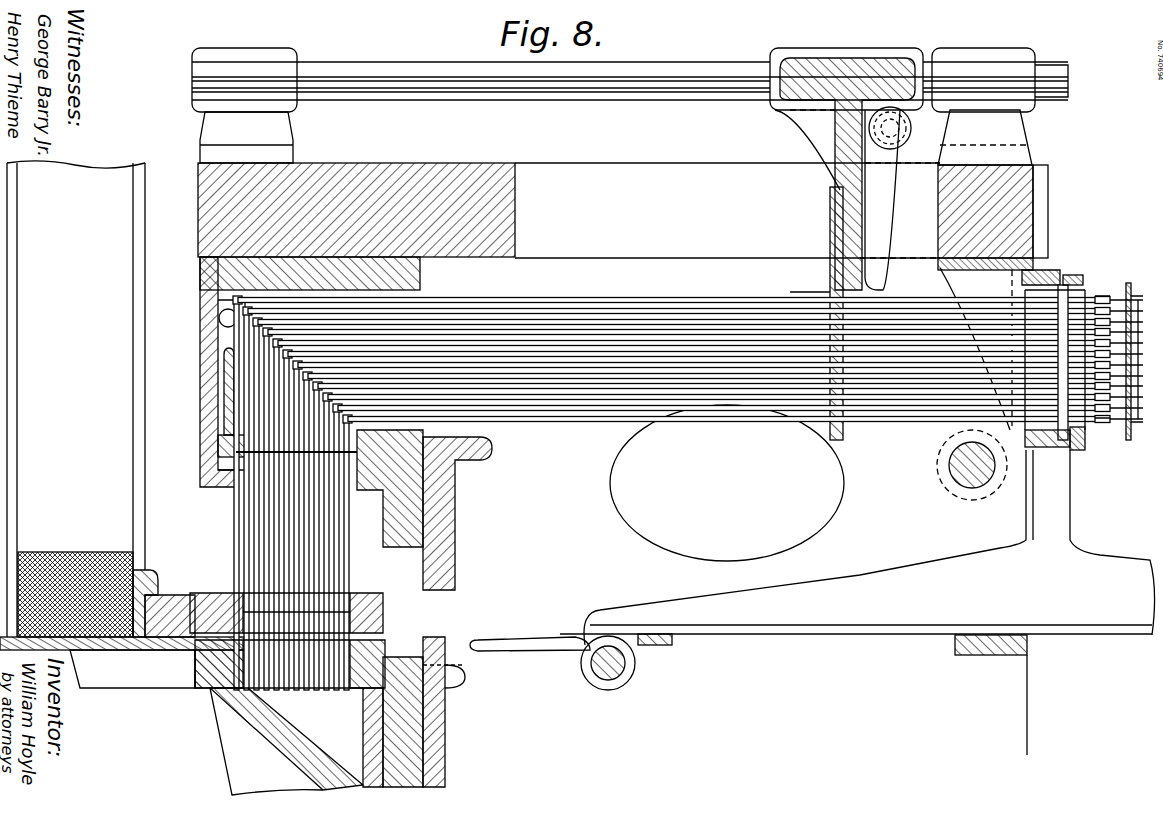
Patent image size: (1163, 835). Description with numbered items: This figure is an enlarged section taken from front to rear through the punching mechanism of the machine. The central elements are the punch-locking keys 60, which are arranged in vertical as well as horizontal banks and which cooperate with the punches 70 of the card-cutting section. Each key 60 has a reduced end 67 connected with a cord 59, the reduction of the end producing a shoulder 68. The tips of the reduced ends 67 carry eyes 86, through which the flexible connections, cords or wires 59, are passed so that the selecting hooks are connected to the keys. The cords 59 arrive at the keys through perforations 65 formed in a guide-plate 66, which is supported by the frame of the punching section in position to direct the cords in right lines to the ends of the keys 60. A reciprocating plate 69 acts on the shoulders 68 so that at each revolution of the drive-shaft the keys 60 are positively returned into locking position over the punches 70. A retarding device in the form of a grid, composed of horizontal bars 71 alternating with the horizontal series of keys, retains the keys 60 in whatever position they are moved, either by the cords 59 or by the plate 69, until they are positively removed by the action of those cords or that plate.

The cord 59 is at (1140, 428).
The punch-locking key 60 is at (688, 350).
The perforations 65 is at (1128, 296).
The guide-plate 66 is at (1079, 391).
The reduced ends 67 is at (1083, 293).
The shoulders 68 is at (805, 292).
The reciprocating plate 69 is at (815, 313).
The punches 70 is at (262, 410).
The horizontal bars 71 is at (1063, 290).
The eyes 86 is at (1098, 300).